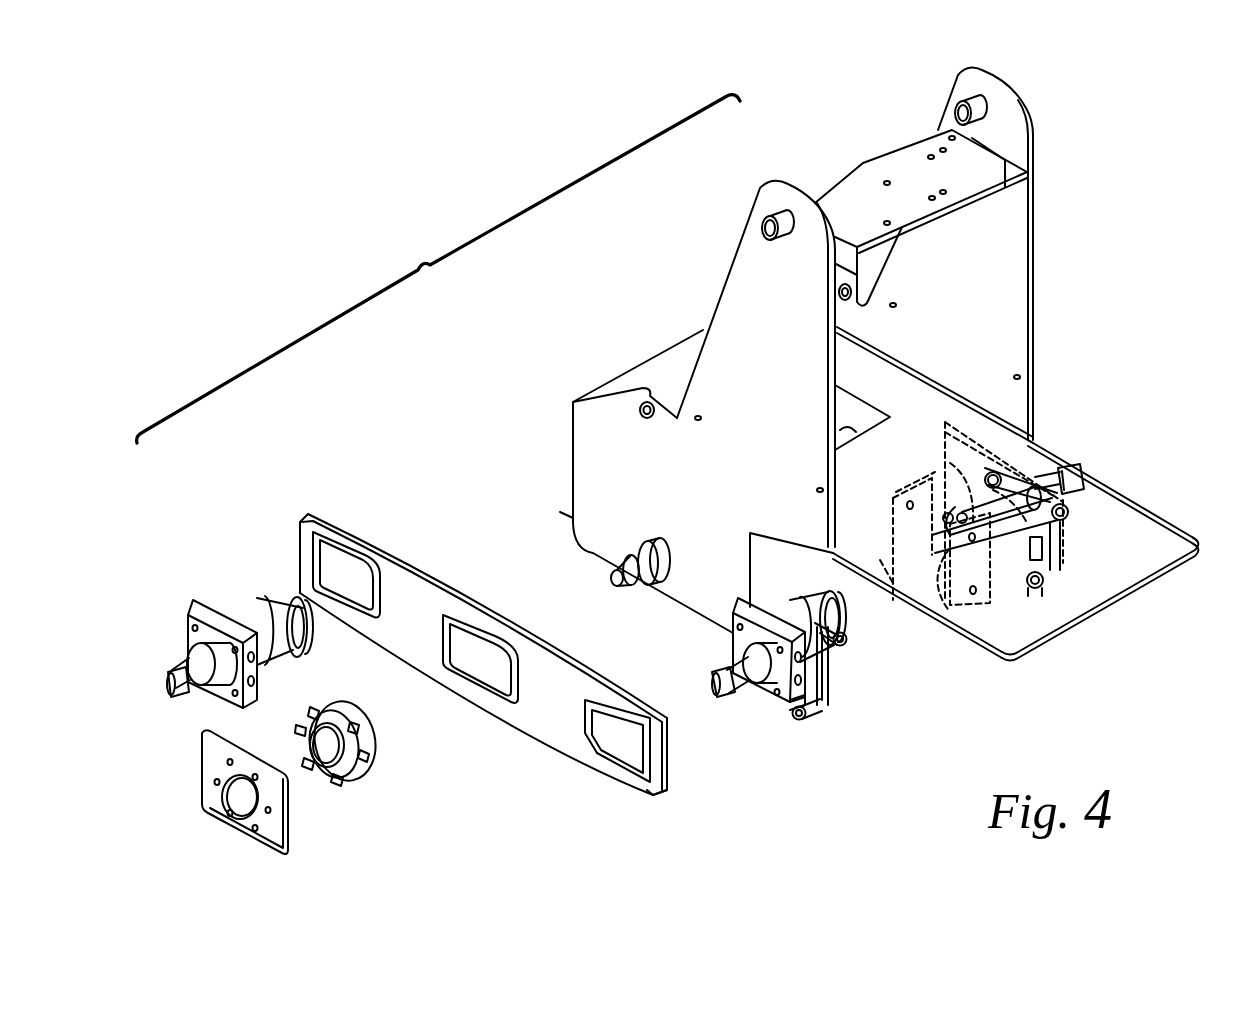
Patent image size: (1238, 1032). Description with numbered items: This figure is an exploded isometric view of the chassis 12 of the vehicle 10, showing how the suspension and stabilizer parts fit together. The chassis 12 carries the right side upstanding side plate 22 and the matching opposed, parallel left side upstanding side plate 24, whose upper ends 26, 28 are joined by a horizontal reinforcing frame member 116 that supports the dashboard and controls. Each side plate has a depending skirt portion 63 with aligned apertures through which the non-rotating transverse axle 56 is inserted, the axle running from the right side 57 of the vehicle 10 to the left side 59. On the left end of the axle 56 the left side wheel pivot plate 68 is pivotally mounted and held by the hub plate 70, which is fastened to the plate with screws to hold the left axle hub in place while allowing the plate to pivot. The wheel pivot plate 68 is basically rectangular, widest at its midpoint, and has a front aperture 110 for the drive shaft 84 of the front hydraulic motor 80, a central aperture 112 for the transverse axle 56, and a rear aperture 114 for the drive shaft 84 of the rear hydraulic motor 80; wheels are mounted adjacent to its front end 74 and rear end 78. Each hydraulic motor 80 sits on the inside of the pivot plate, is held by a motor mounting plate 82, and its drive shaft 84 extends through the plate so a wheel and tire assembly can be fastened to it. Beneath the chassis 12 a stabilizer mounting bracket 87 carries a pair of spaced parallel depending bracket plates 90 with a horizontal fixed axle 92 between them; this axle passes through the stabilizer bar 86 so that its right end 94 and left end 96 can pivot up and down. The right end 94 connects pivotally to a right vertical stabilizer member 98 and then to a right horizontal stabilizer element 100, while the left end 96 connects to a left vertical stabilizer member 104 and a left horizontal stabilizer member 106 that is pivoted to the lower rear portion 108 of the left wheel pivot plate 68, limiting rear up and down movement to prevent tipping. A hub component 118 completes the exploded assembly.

The vehicle 10 is at (330, 193).
The chassis 12 is at (1160, 577).
The right side upstanding side plate 22 is at (1033, 340).
The left side upstanding side plate 24 is at (747, 243).
The upper end of right side upstanding side plate 26 is at (1000, 81).
The upper end of left side upstanding side plate 28 is at (777, 183).
The transverse axle 56 is at (612, 578).
The right side of the vehicle 57 is at (1033, 280).
The left side of the vehicle 59 is at (568, 430).
The depending skirt portion 63 is at (578, 540).
The left side wheel pivot plate 68 is at (528, 742).
The hub plate 70 is at (240, 835).
The front end of left side wheel pivot plate 74 is at (305, 525).
The rear end of left side wheel pivot plate 78 is at (668, 790).
The hydraulic motor 80 is at (258, 598).
The motor mounting plate 82 is at (188, 615).
The drive shaft 84 is at (170, 678).
The stabilizer bar 86 is at (907, 617).
The stabilizer mounting bracket 87 is at (892, 540).
The depending bracket plates 90 is at (898, 493).
The horizontal fixed axle 92 is at (900, 565).
The right end of stabilizer bar 94 is at (1067, 505).
The left end of stabilizer bar 96 is at (840, 650).
The right vertical stabilizer member 98 is at (1062, 572).
The right horizontal stabilizer element 100 is at (1050, 593).
The left vertical stabilizer member 104 is at (833, 690).
The left horizontal stabilizer member 106 is at (815, 715).
The lower rear portion of left side wheel pivot plate 108 is at (790, 712).
The front aperture 110 is at (343, 540).
The central aperture 112 is at (473, 612).
The rear aperture 114 is at (620, 768).
The horizontal reinforcing frame member 116 is at (865, 163).
The hub 118 is at (350, 785).